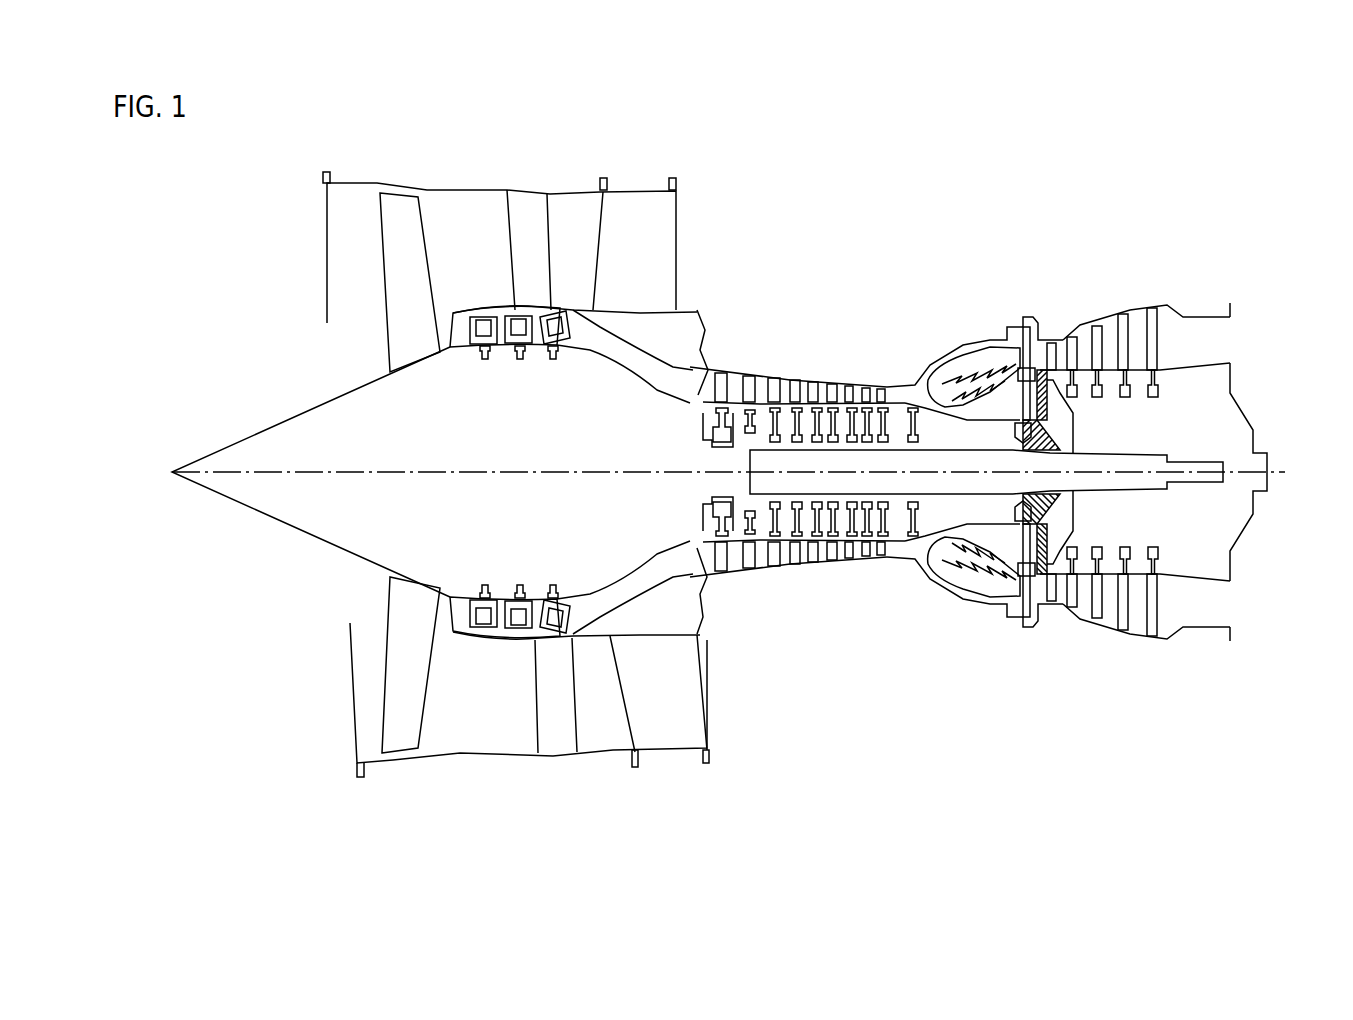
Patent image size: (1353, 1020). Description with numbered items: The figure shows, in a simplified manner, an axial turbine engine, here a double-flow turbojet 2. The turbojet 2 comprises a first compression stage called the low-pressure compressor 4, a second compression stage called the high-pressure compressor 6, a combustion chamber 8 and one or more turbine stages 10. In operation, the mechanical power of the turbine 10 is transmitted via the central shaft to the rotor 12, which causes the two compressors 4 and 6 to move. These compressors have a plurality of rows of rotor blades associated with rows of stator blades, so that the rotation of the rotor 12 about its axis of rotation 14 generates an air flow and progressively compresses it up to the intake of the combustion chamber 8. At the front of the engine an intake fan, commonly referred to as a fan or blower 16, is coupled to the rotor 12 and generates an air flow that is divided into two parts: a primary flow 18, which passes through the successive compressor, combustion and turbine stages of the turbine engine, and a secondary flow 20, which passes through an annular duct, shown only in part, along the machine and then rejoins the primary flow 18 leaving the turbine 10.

The turbojet 2 is at (960, 210).
The low-pressure compressor 4 is at (477, 353).
The high-pressure compressor 6 is at (765, 387).
The combustion chamber 8 is at (940, 387).
The turbine stages 10 is at (1130, 347).
The rotor 12 is at (288, 510).
The axis of rotation 14 is at (522, 477).
The fan 16 is at (407, 275).
The primary flow 18 is at (566, 337).
The secondary flow 20 is at (677, 237).